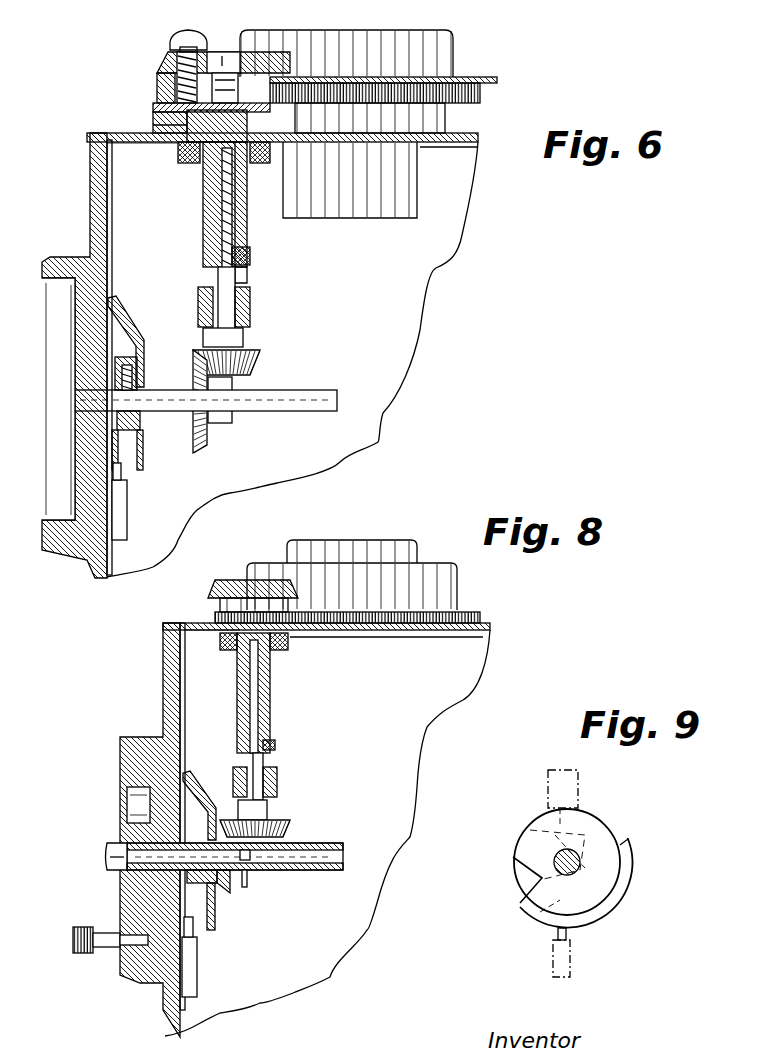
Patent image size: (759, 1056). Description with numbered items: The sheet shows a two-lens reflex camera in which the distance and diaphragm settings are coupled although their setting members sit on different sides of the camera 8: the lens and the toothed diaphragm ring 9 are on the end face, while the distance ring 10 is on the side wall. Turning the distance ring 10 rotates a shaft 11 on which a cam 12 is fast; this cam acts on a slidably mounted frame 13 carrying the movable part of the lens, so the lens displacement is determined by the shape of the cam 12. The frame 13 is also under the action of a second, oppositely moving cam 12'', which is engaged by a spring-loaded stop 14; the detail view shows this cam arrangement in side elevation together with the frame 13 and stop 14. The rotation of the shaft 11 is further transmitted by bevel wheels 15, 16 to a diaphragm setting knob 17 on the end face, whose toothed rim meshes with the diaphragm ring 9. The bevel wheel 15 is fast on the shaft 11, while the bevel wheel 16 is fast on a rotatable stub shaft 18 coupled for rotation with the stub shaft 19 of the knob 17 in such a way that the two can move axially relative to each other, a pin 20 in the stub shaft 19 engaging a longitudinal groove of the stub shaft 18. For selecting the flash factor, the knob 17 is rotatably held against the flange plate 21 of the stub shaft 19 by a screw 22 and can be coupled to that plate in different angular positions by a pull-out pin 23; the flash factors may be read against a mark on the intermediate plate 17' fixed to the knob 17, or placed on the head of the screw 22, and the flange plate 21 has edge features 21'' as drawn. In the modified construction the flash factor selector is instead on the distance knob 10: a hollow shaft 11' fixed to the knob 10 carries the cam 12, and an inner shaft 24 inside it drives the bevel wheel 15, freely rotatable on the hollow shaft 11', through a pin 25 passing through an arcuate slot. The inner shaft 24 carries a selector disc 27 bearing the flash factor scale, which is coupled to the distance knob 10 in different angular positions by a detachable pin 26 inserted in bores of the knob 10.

In FIG. 6, the camera 8 is at (455, 175).
In FIG. 8, the camera 8 is at (466, 672).
In FIG. 6, the diaphragm ring 9 is at (482, 78).
In FIG. 8, the diaphragm ring 9 is at (472, 622).
In FIG. 6, the distance ring 10 is at (58, 268).
In FIG. 8, the distance ring 10 is at (138, 748).
In FIG. 6, the shaft 11 is at (205, 387).
In FIG. 8, the hollow shaft 11' is at (239, 846).
In FIG. 6, the cam 12 is at (144, 441).
In FIG. 8, the cam 12 is at (208, 940).
In FIG. 9, the cam 12 is at (559, 887).
In FIG. 6, the second cam 12'' is at (147, 355).
In FIG. 8, the second cam 12'' is at (203, 802).
In FIG. 9, the second cam 12'' is at (604, 879).
In FIG. 9, the frame 13 is at (580, 780).
In FIG. 6, the spring-loaded stop 14 is at (128, 509).
In FIG. 9, the spring-loaded stop 14 is at (572, 954).
In FIG. 6, the bevel wheel 15 is at (205, 432).
In FIG. 8, the bevel wheel 15 is at (223, 895).
In FIG. 6, the bevel wheel 16 is at (230, 336).
In FIG. 8, the bevel wheel 16 is at (290, 825).
In FIG. 6, the diaphragm setting knob 17 is at (202, 75).
In FIG. 8, the diaphragm setting knob 17 is at (242, 586).
In FIG. 6, the intermediate plate 17' is at (191, 92).
In FIG. 6, the stub shaft 18 is at (232, 290).
In FIG. 8, the stub shaft 18 is at (264, 769).
In FIG. 6, the stub shaft 19 is at (205, 213).
In FIG. 8, the stub shaft 19 is at (240, 713).
In FIG. 6, the pin 20 is at (252, 254).
In FIG. 6, the flange plate 21 is at (150, 120).
In FIG. 6, the block edge 21'' is at (134, 121).
In FIG. 6, the screw 22 is at (222, 57).
In FIG. 6, the pin 23 is at (172, 40).
In FIG. 8, the inner shaft 24 is at (278, 872).
In FIG. 8, the pin 25 is at (246, 888).
In FIG. 8, the detachable pin 26 is at (106, 930).
In FIG. 8, the selector disc 27 is at (127, 803).